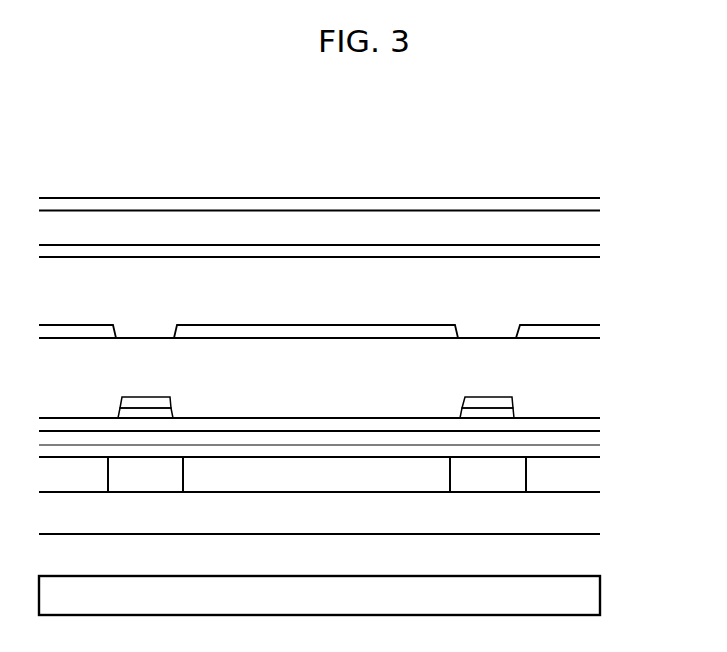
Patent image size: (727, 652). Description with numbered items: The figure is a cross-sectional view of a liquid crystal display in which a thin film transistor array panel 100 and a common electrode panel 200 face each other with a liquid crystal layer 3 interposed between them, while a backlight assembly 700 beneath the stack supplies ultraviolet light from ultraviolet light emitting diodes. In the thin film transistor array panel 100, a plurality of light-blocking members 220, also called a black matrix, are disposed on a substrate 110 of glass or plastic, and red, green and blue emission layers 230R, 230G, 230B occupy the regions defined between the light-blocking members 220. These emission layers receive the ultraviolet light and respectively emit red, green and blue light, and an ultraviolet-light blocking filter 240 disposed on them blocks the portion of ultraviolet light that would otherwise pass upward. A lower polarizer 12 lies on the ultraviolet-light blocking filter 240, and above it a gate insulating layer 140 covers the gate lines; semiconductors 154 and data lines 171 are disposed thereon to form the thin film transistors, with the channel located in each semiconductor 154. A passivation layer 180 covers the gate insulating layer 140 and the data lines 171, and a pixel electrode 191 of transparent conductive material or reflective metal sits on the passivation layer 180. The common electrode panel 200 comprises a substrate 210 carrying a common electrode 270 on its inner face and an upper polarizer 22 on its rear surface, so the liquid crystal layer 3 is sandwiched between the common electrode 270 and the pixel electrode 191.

The upper polarizer 22 is at (588, 203).
The substrate 210 is at (588, 228).
The common electrode 270 is at (588, 252).
The common electrode panel 200 is at (653, 195).
The liquid crystal layer 3 is at (591, 290).
The pixel electrode 191 is at (588, 330).
The passivation layer 180 is at (590, 373).
The gate insulating layer 140 is at (588, 424).
The lower polarizer 12 is at (590, 440).
The ultraviolet-light blocking filter 240 is at (590, 453).
The red emission layer 230R is at (88, 486).
The green emission layer 230G is at (338, 486).
The blue emission layer 230B is at (587, 486).
The light-blocking member 220 is at (145, 476).
The substrate 110 is at (590, 513).
The thin film transistor array panel 100 is at (657, 325).
The data line 171 is at (135, 403).
The semiconductor 154 is at (153, 415).
The backlight assembly 700 is at (600, 595).